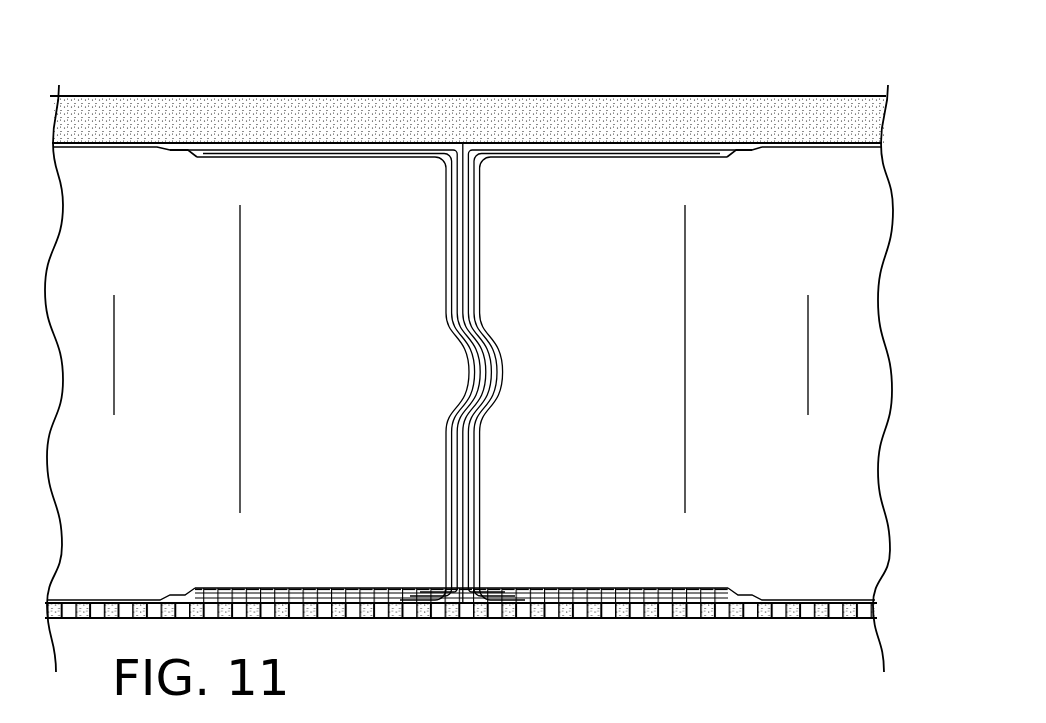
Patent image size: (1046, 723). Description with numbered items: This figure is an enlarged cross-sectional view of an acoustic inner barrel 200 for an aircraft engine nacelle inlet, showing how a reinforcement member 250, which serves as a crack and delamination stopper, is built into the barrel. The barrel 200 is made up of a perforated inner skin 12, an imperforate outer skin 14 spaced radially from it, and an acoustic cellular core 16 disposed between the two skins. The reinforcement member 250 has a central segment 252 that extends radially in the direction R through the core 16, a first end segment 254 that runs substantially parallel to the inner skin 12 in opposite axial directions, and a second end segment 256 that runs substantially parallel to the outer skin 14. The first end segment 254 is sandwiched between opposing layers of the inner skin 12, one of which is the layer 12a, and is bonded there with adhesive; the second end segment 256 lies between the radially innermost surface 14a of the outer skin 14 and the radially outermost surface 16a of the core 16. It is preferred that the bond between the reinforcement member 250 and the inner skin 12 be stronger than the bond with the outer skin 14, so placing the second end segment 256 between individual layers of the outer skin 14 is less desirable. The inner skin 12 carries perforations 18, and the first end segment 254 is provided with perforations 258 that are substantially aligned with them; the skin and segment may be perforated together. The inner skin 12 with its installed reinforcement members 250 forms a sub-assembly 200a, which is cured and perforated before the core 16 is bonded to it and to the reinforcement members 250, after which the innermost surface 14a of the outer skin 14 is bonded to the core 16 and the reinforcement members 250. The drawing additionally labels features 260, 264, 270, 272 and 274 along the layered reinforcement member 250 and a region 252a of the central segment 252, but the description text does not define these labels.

The barrel 200 is at (608, 67).
The sub-assembly 200a is at (444, 497).
The second end segment 256 is at (510, 155).
The radially outermost surface of the core 16a is at (235, 157).
The outer skin 14 is at (792, 95).
The radially innermost surface of the outer skin 14a is at (97, 148).
The acoustic cellular core 16 is at (803, 474).
The outer conductive layer 270 is at (444, 191).
The conductive layer 260 is at (482, 192).
The intermediate layer 274 is at (451, 240).
The reinforcement member 250 is at (461, 373).
The inner layer 272 is at (457, 283).
The curved portion of spring contact 252a is at (470, 377).
The conductive layer 264 is at (470, 449).
The central segment 252 is at (470, 473).
The inner skin layer 12a is at (246, 586).
The perforations 18 is at (284, 586).
The first end segment 254 is at (372, 587).
The perforations 258 is at (388, 596).
The inner skin 12 is at (433, 613).
The radial direction R is at (519, 318).